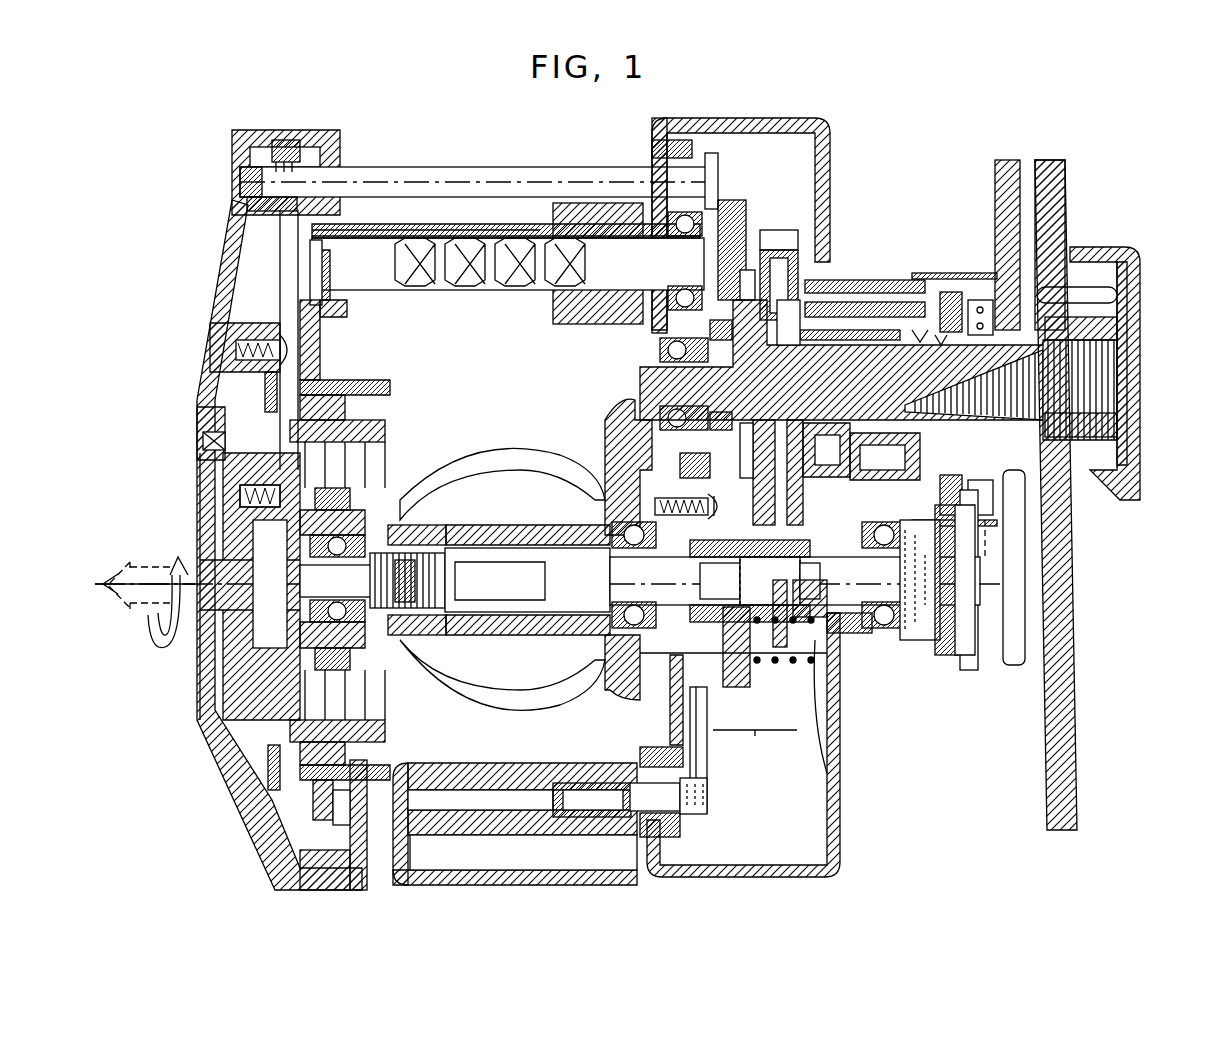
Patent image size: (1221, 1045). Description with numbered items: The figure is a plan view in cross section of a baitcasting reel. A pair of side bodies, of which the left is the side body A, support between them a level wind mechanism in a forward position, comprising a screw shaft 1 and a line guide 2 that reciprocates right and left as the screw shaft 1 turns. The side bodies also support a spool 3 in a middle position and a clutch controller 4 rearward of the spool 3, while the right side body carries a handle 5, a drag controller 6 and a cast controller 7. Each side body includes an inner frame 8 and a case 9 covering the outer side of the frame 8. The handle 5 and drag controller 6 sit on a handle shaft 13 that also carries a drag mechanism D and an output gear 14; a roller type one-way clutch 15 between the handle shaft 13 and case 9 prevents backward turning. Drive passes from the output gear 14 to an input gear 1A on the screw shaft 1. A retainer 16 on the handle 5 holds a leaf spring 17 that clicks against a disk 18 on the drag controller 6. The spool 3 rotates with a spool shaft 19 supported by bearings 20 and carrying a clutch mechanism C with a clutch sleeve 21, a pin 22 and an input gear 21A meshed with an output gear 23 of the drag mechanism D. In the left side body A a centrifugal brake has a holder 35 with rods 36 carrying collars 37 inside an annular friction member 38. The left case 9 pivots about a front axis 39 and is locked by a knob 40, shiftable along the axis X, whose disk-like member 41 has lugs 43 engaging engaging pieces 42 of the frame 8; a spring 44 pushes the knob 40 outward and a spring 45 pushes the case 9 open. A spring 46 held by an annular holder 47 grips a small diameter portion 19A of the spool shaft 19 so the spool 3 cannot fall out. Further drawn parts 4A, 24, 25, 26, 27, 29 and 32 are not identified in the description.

The screw shaft 1 is at (470, 287).
The input gear 1A is at (735, 212).
The line guide 2 is at (578, 325).
The spool 3 is at (572, 625).
The clutch controller 4 is at (570, 765).
The lower housing boss 4A is at (695, 792).
The handle 5 is at (1060, 690).
The drag controller 6 is at (1015, 566).
The cast controller 7 is at (978, 605).
The inner frame 8 is at (322, 140).
The case 9 is at (245, 178).
The handle shaft 13 is at (1105, 366).
The output gear 14 is at (635, 462).
The roller type one-way clutch 15 is at (935, 300).
The retainer 16 is at (1135, 330).
The leaf spring 17 is at (1095, 290).
The disk 18 is at (1035, 300).
The spool shaft 19 is at (492, 548).
The small diameter portion 19A is at (895, 630).
The bearings 20 is at (590, 545).
The clutch sleeve 21 is at (778, 700).
The input gear 21A is at (832, 795).
The pin 22 is at (738, 672).
The output gear 23 is at (790, 232).
The pin 24 is at (700, 592).
The bearing 25 is at (860, 630).
The screw 26 is at (692, 478).
The lever 27 is at (700, 760).
The rear housing 29 is at (838, 748).
The spacer 32 is at (748, 272).
The holder 35 is at (385, 512).
The rods 36 is at (345, 490).
The collars 37 is at (365, 468).
The annular friction member 38 is at (350, 432).
The front axis 39 is at (250, 195).
The knob 40 is at (205, 447).
The disk-like member 41 is at (262, 540).
The engaging pieces 42 is at (352, 372).
The lugs 43 is at (352, 395).
The spring 44 is at (258, 392).
The spring 45 is at (296, 212).
The spring 46 is at (965, 650).
The annular holder 47 is at (945, 650).
The side body A is at (210, 278).
The clutch mechanism C is at (755, 745).
The drag mechanism D is at (830, 263).
The axis X is at (743, 581).